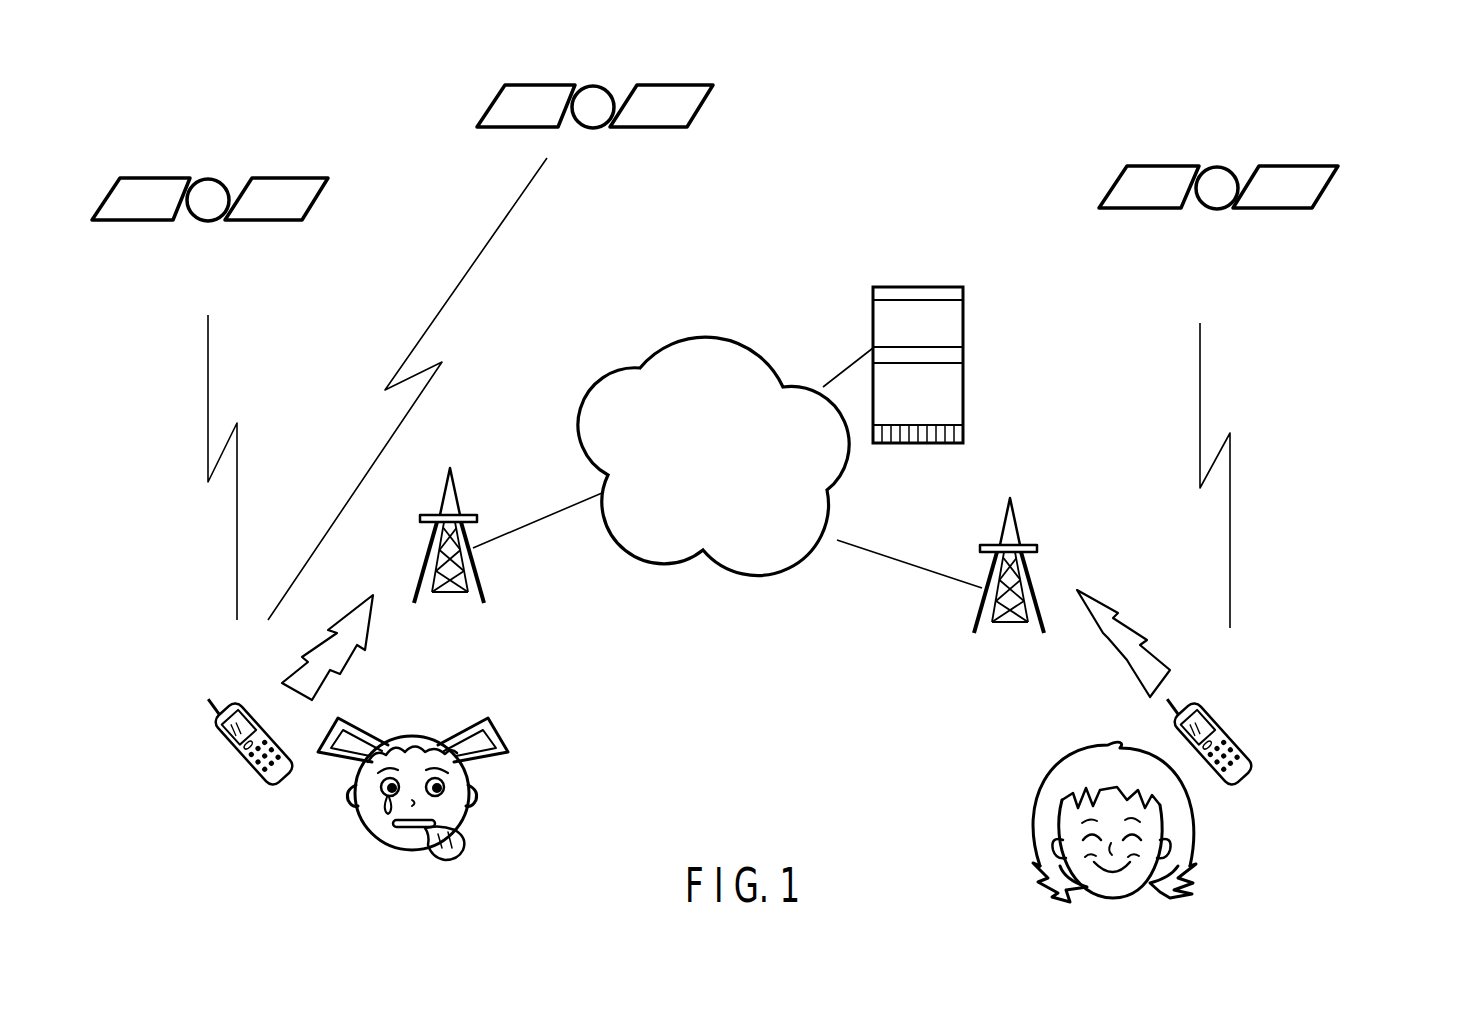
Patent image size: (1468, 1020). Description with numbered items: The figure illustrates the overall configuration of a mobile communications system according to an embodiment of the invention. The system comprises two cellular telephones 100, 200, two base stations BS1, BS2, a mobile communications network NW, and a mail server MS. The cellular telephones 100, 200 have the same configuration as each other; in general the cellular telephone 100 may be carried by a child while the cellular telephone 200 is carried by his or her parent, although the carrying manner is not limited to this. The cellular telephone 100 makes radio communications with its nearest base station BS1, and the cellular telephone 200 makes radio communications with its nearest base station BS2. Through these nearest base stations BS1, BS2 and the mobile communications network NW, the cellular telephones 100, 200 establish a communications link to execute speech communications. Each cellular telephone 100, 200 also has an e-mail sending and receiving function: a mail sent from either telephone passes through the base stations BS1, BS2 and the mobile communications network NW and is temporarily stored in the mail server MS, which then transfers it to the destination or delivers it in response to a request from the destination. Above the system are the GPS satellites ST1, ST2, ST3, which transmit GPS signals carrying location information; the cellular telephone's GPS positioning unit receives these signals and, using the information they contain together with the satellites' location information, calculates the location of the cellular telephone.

The GPS satellite ST1 is at (215, 173).
The GPS satellite ST2 is at (598, 78).
The GPS satellite ST3 is at (1232, 158).
The mobile communications network NW is at (712, 337).
The mail server MS is at (903, 287).
The base station BS1 is at (447, 600).
The base station BS2 is at (1007, 630).
The cellular telephone 100 is at (238, 765).
The cellular telephone 200 is at (1233, 740).